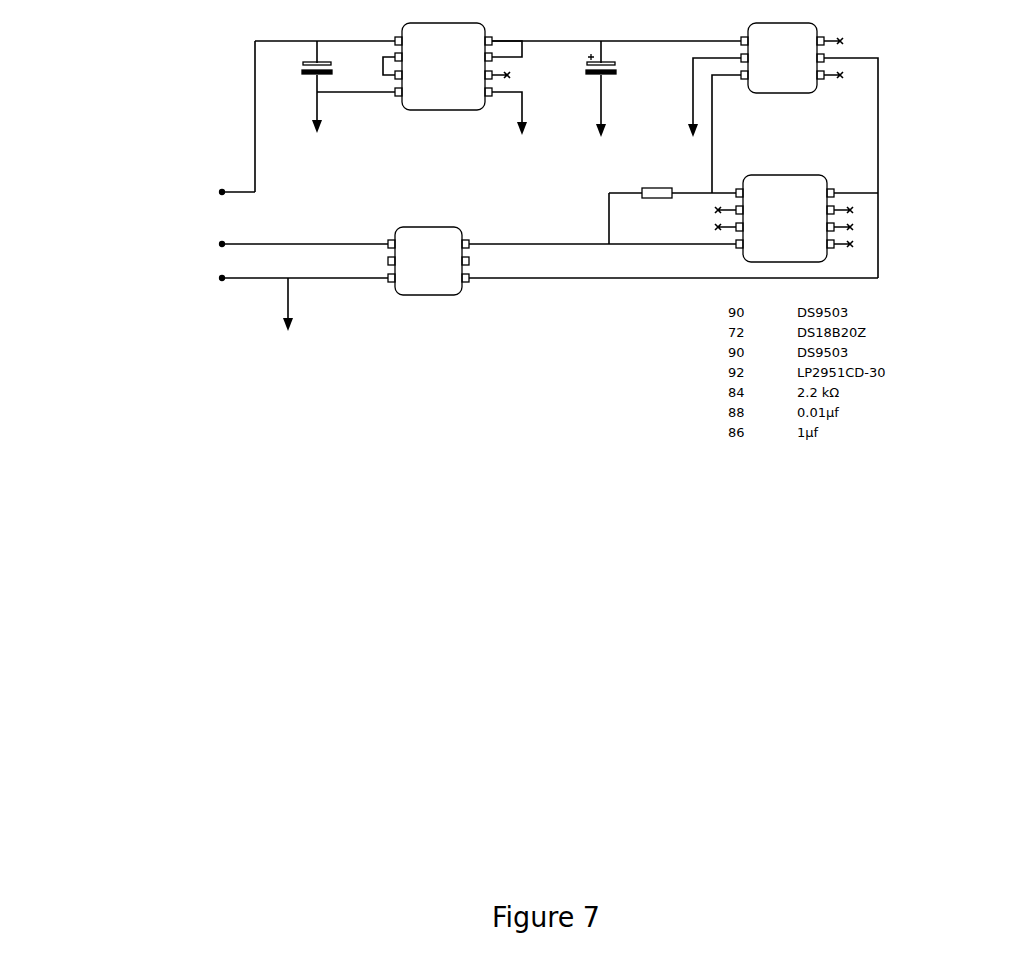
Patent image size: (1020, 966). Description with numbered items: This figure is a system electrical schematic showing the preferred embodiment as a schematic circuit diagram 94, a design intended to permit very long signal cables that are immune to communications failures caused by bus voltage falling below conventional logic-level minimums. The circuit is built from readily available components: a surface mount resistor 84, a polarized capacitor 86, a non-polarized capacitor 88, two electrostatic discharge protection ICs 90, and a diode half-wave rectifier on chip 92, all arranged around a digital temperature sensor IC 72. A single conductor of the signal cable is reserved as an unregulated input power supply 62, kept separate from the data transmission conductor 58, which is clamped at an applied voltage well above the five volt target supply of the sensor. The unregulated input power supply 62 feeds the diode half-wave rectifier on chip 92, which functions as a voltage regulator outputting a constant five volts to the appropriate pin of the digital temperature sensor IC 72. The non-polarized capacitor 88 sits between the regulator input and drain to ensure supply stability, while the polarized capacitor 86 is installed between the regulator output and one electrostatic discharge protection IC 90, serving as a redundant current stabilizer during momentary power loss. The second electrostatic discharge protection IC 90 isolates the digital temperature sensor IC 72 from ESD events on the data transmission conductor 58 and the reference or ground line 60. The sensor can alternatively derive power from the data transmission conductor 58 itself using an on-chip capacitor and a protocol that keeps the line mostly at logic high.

The diode half-wave rectifier on chip 92 is at (443, 66).
The non-polarized capacitor 88 is at (335, 87).
The polarized capacitor 86 is at (598, 89).
The electrostatic discharge protection IC 90 is at (606, 159).
The digital temperature sensor IC 72 is at (785, 218).
The surface mount resistor 84 is at (672, 194).
The unregulated input power supply 62 is at (148, 182).
The data transmission conductor 58 is at (165, 239).
The reference or ground line 60 is at (174, 279).
The schematic circuit diagram 94 is at (480, 394).